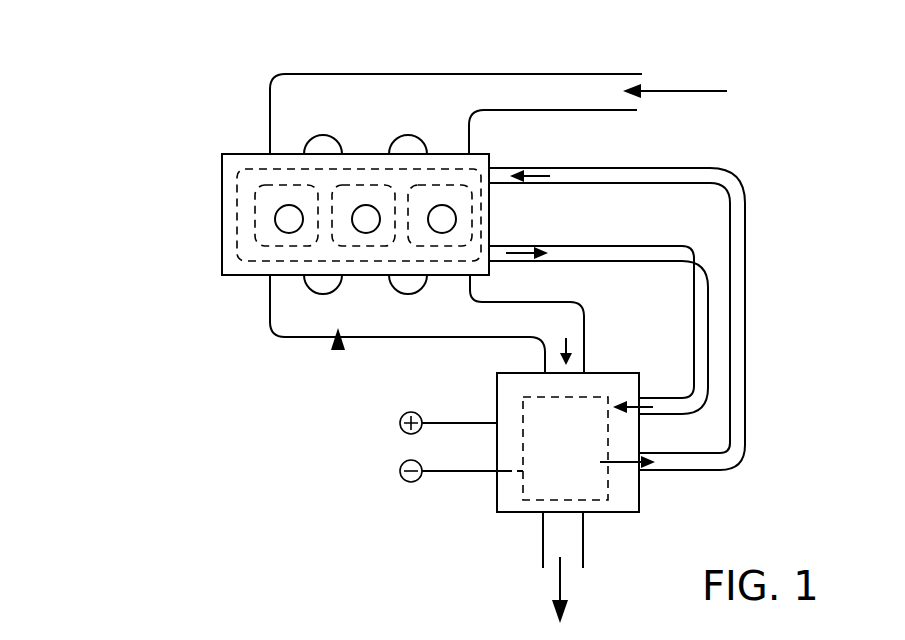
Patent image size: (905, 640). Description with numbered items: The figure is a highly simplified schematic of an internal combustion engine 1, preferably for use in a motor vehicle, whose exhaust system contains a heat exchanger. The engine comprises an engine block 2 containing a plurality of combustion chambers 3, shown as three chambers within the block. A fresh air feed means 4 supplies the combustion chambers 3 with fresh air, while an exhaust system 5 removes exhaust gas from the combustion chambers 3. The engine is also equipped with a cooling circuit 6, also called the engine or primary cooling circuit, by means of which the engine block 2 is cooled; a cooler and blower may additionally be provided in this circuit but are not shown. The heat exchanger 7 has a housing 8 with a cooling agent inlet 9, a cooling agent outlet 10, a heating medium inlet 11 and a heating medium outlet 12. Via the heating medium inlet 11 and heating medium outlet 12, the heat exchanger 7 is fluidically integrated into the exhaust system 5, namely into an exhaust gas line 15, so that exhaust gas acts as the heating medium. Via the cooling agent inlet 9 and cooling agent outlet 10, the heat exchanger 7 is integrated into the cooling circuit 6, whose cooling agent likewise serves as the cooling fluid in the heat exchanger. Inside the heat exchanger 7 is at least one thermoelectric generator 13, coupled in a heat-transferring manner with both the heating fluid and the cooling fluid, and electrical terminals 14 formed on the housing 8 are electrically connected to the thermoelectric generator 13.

The internal combustion engine 1 is at (166, 101).
The engine block 2 is at (211, 240).
The combustion chambers 3 is at (289, 206).
The fresh air feed means 4 is at (363, 62).
The exhaust system 5 is at (336, 352).
The cooling circuit 6 is at (759, 226).
The heat exchanger 7 is at (486, 501).
The housing 8 is at (620, 512).
The cooling agent inlet 9 is at (640, 398).
The cooling agent outlet 10 is at (639, 472).
The heating medium inlet 11 is at (584, 372).
The heating medium outlet 12 is at (542, 512).
The thermoelectric generator 13 is at (497, 395).
The electrical terminals 14 is at (497, 462).
The exhaust gas line 15 is at (522, 312).